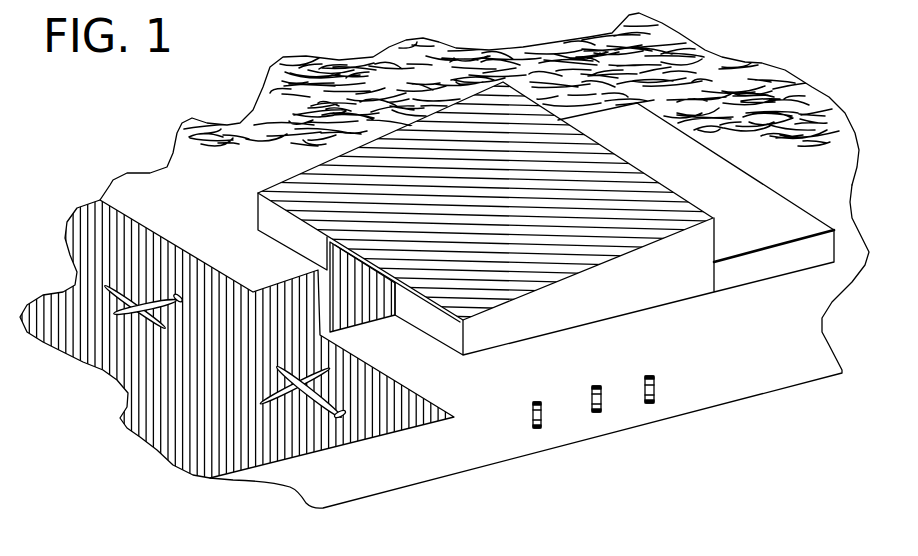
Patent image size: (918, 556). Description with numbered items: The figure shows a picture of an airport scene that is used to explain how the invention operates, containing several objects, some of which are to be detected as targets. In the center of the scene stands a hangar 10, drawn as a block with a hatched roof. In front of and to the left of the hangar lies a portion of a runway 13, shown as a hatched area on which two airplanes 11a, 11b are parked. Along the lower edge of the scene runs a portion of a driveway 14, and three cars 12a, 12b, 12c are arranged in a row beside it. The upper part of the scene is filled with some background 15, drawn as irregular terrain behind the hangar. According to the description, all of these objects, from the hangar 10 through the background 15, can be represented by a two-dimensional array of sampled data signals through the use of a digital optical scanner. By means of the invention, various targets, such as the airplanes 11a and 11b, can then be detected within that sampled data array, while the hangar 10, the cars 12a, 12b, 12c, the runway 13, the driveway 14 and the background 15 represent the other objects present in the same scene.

The hangar 10 is at (650, 197).
The airplane 11a is at (112, 327).
The airplane 11b is at (272, 417).
The car 12a is at (536, 438).
The car 12b is at (595, 423).
The car 12c is at (649, 412).
The portion of a runway 13 is at (155, 413).
The portion of a driveway 14 is at (469, 455).
The background 15 is at (479, 62).